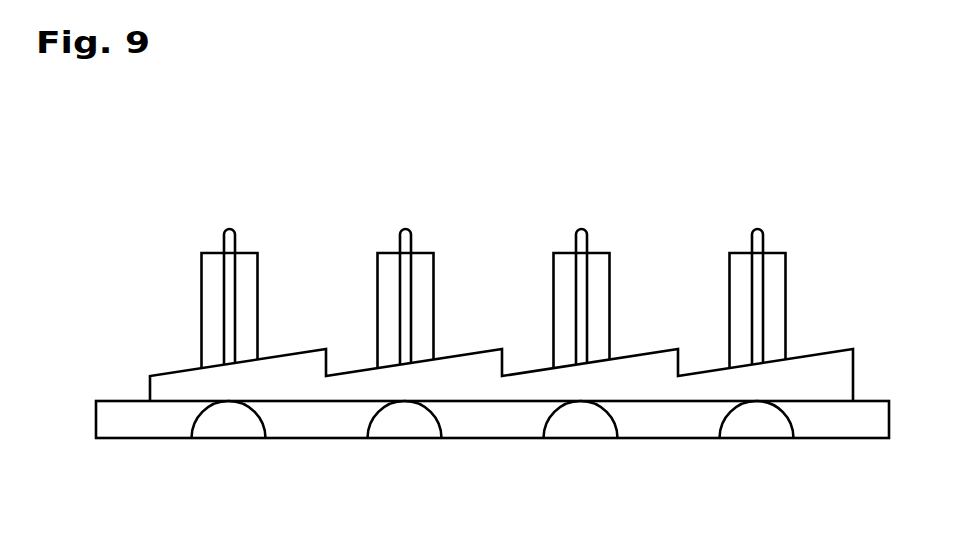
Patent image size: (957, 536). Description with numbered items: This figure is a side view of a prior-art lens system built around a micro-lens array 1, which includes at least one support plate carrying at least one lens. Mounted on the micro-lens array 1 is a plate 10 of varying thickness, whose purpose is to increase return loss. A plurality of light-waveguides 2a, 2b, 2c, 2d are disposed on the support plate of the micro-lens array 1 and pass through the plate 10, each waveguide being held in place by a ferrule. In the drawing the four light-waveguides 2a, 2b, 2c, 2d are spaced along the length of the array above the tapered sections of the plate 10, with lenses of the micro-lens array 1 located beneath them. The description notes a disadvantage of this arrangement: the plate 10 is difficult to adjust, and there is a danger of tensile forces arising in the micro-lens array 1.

The micro-lens array 1 is at (107, 412).
The plate of varying thickness 10 is at (162, 373).
The light-waveguide 2a is at (231, 225).
The light-waveguide 2b is at (407, 225).
The light-waveguide 2c is at (583, 225).
The light-waveguide 2d is at (759, 225).